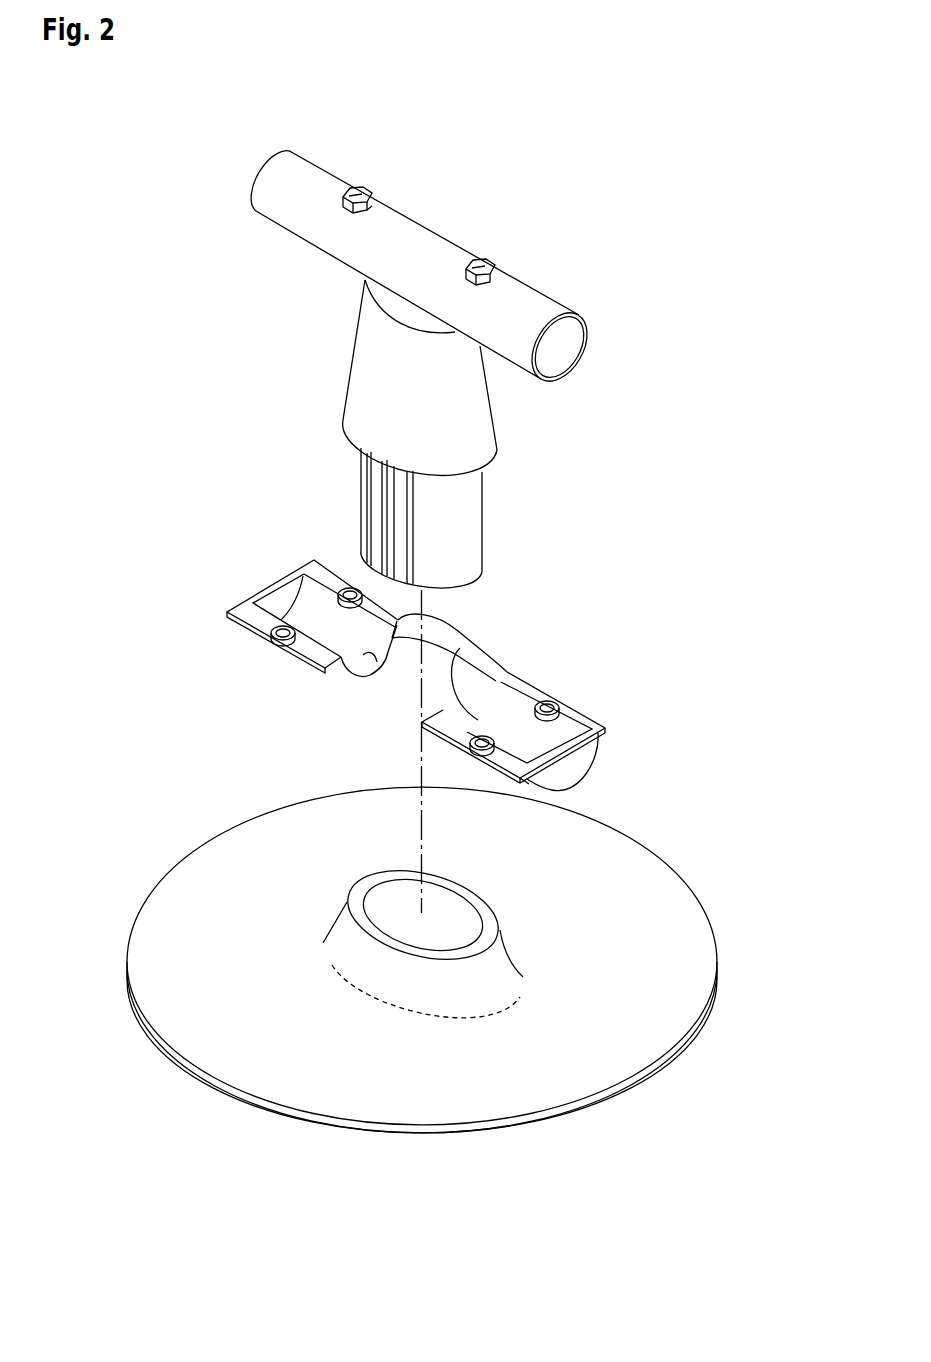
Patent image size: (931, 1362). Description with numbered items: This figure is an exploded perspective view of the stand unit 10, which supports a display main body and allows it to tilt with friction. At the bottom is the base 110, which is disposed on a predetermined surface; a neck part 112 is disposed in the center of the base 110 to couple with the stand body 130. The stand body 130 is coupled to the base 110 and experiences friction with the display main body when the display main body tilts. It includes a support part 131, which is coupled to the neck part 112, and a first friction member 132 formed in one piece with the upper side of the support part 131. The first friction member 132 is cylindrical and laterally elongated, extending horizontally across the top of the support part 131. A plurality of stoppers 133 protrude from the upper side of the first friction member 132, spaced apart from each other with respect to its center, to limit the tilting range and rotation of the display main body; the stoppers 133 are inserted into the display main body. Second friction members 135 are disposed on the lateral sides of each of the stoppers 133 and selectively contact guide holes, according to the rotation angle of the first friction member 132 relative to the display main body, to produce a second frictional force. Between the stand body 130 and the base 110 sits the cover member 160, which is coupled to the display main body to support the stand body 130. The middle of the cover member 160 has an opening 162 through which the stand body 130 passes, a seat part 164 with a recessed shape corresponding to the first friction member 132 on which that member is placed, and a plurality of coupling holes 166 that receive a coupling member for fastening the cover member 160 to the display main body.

The stand unit 10 is at (186, 161).
The base 110 is at (681, 911).
The neck part 112 is at (393, 977).
The stand body 130 is at (580, 270).
The support part 131 is at (477, 406).
The first friction member 132 is at (518, 293).
The stoppers 133 is at (356, 187).
The second friction members 135 is at (380, 203).
The cover member 160 is at (605, 755).
The opening 162 is at (445, 681).
The seat part 164 is at (362, 653).
The coupling holes 166 is at (352, 588).